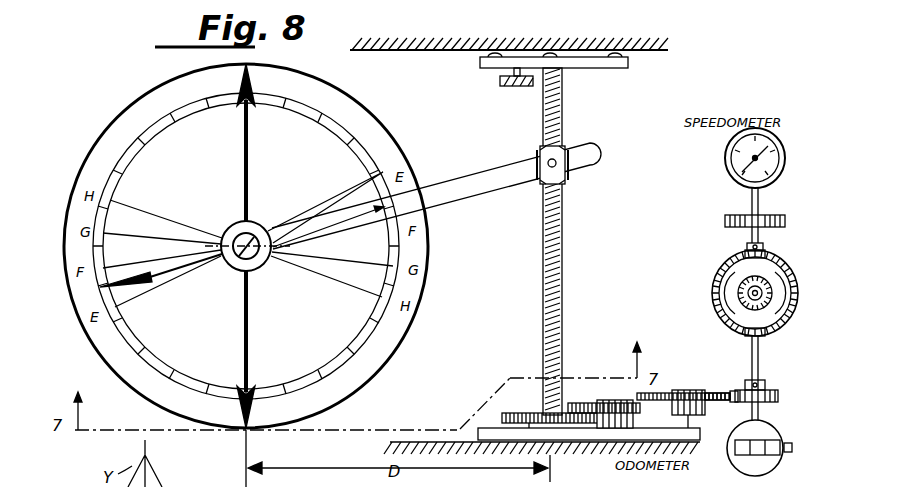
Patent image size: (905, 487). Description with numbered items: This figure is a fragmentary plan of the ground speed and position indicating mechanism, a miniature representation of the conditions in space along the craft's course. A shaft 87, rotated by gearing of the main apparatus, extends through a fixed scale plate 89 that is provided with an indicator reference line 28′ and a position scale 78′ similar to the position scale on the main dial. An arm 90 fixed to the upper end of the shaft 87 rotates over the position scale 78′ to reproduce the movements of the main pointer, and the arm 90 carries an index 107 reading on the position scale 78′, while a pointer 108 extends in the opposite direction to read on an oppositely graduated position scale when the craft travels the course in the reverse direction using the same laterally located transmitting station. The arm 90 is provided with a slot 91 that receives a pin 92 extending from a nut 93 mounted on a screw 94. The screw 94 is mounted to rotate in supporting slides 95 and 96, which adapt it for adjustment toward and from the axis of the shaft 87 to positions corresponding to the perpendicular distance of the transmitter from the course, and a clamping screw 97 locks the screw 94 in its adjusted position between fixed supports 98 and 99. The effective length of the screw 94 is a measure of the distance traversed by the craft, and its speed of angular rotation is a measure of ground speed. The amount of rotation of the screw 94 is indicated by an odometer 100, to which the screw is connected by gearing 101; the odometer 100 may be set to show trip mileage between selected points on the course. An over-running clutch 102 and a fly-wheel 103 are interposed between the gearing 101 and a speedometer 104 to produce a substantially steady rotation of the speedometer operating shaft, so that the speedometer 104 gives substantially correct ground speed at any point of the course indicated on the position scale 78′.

The indicator reference line 28′ is at (248, 148).
The position scale 78′ is at (376, 303).
The shaft 87 is at (234, 230).
The fixed scale plate 89 is at (418, 308).
The arm 90 is at (292, 226).
The slot 91 is at (455, 192).
The pin 92 is at (566, 153).
The nut 93 is at (570, 179).
The screw 94 is at (562, 237).
The supporting slide 95 is at (577, 66).
The supporting slide 96 is at (486, 414).
The clamping screw 97 is at (500, 84).
The fixed support 98 is at (396, 51).
The fixed support 99 is at (478, 432).
The odometer 100 is at (770, 430).
The gearing 101 is at (686, 378).
The over-running clutch 102 is at (722, 270).
The fly-wheel 103 is at (725, 218).
The speedometer 104 is at (726, 152).
The index 107 is at (372, 214).
The pointer 108 is at (126, 277).